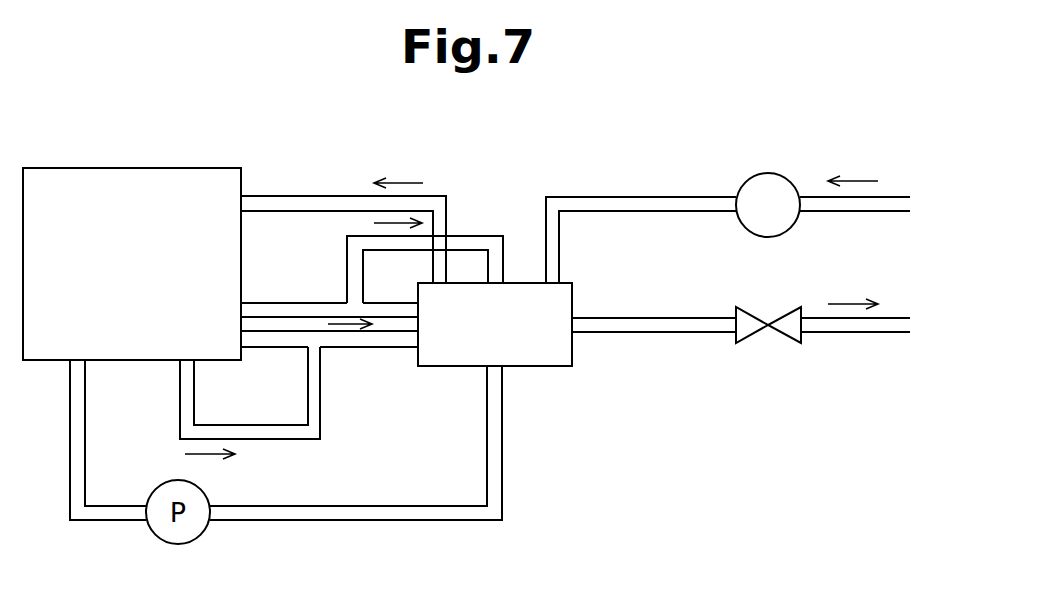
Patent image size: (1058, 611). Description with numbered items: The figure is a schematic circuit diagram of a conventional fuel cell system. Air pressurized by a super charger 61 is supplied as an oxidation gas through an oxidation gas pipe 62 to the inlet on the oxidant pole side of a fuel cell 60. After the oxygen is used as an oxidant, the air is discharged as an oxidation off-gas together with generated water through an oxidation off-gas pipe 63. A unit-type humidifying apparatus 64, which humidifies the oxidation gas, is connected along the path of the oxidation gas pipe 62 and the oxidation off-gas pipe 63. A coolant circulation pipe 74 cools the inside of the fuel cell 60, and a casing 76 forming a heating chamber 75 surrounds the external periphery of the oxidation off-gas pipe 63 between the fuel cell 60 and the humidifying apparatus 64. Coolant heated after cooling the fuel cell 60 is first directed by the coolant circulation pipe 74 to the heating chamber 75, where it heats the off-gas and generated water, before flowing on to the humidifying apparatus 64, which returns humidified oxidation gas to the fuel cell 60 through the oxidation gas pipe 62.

The fuel cell 60 is at (137, 178).
The super charger 61 is at (770, 178).
The oxidation gas pipe 62 is at (319, 197).
The oxidation off-gas pipe 63 is at (303, 325).
The humidifying apparatus 64 is at (548, 367).
The coolant circulation pipe 74 is at (481, 236).
The heating chamber 75 is at (268, 349).
The casing 76 is at (390, 348).